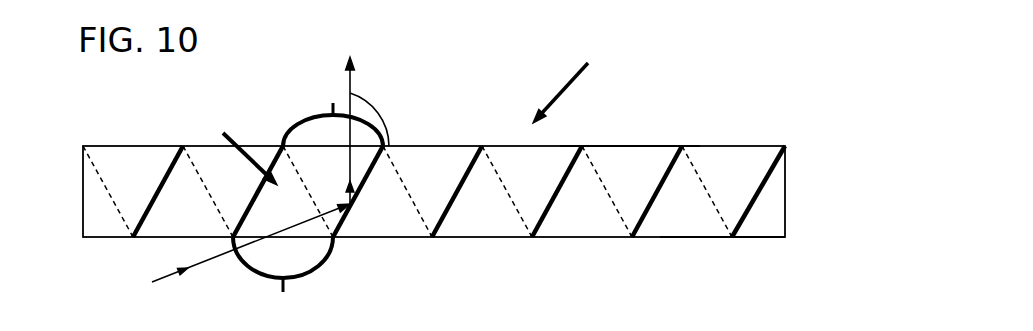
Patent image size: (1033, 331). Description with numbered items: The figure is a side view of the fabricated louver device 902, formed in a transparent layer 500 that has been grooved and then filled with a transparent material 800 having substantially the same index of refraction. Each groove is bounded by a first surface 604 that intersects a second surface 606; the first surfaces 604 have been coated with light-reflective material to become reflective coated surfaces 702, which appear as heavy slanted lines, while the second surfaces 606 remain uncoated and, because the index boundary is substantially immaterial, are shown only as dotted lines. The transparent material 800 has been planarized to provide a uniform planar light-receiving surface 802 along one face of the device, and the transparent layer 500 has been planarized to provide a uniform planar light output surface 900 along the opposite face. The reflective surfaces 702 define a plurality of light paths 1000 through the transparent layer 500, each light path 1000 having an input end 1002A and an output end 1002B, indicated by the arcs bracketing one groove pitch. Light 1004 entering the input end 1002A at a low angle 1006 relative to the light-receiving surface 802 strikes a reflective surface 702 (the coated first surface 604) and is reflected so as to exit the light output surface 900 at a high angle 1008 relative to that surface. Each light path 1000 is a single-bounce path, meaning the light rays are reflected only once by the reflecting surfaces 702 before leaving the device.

The transparent layer 500 is at (728, 158).
The first surface 604 is at (551, 206).
The second surface 606 is at (619, 214).
The reflective coated surface 702 is at (162, 178).
The transparent material 800 is at (92, 203).
The light-receiving surface 802 is at (760, 237).
The light output surface 900 is at (632, 146).
The fabricated louver device 902 is at (575, 80).
The light path 1000 is at (235, 146).
The input end 1002A is at (283, 279).
The output end 1002B is at (332, 112).
The light 1004 is at (181, 270).
The low angle 1006 is at (230, 250).
The high angle 1008 is at (380, 118).